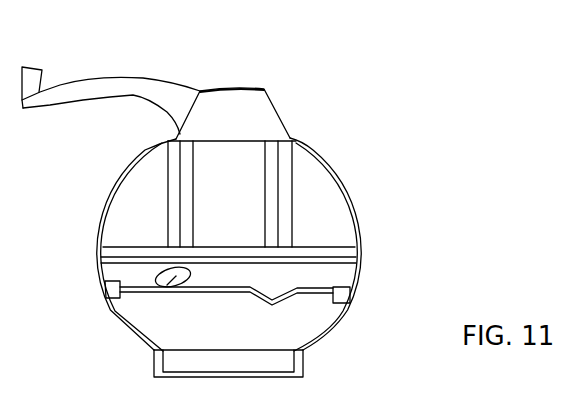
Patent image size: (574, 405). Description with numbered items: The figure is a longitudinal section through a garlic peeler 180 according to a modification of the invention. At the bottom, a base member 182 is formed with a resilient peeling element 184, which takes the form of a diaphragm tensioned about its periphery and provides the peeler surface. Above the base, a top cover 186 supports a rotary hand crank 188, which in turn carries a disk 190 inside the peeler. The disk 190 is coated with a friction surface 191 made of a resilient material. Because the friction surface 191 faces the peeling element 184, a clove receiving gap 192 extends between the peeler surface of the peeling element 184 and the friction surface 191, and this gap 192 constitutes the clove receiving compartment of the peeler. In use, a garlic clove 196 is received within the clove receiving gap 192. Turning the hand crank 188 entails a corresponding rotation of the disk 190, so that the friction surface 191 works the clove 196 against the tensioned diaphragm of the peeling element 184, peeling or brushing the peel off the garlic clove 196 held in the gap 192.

The garlic peeler 180 is at (381, 192).
The base member 182 is at (350, 274).
The resilient peeling element 184 is at (293, 296).
The top cover 186 is at (322, 158).
The rotary hand crank 188 is at (75, 97).
The disk 190 is at (233, 247).
The friction surface 191 is at (102, 268).
The clove receiving gap 192 is at (117, 282).
The garlic clove 196 is at (167, 287).